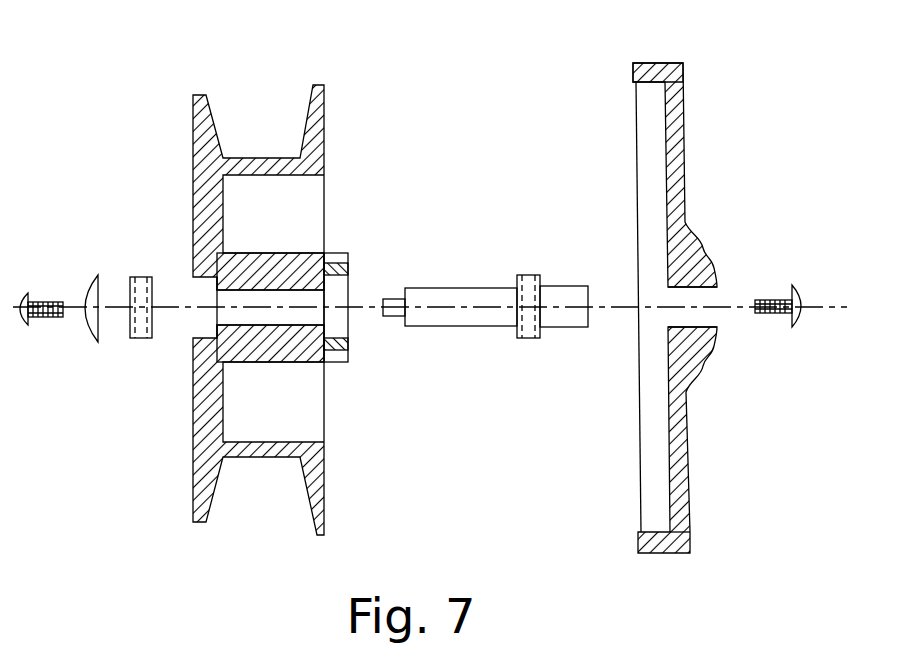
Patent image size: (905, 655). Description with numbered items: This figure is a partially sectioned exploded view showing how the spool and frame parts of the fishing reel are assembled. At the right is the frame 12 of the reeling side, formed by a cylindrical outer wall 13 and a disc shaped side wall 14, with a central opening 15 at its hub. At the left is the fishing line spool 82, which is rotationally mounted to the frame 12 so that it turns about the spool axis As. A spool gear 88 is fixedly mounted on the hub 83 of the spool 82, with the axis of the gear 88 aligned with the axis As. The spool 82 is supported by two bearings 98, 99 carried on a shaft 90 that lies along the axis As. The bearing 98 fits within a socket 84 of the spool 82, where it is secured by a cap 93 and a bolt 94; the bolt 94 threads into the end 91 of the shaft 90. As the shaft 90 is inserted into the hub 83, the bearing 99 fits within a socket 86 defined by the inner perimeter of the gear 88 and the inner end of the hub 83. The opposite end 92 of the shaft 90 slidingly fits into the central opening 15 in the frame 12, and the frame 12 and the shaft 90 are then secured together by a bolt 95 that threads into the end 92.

The frame 12 is at (689, 176).
The cylindrical outer wall 13 is at (653, 63).
The disc shaped side wall 14 is at (687, 457).
The central opening 15 is at (710, 317).
The fishing line spool 82 is at (198, 132).
The hub 83 is at (253, 262).
The socket 84 is at (192, 330).
The socket 86 is at (342, 328).
The spool gear 88 is at (333, 258).
The shaft 90 is at (455, 292).
The end 91 is at (393, 298).
The end 92 is at (570, 292).
The cap 93 is at (93, 274).
The bolt 94 is at (43, 303).
The bolt 95 is at (777, 300).
The bearing 98 is at (138, 277).
The bearing 99 is at (523, 275).
The spool axis As is at (818, 307).